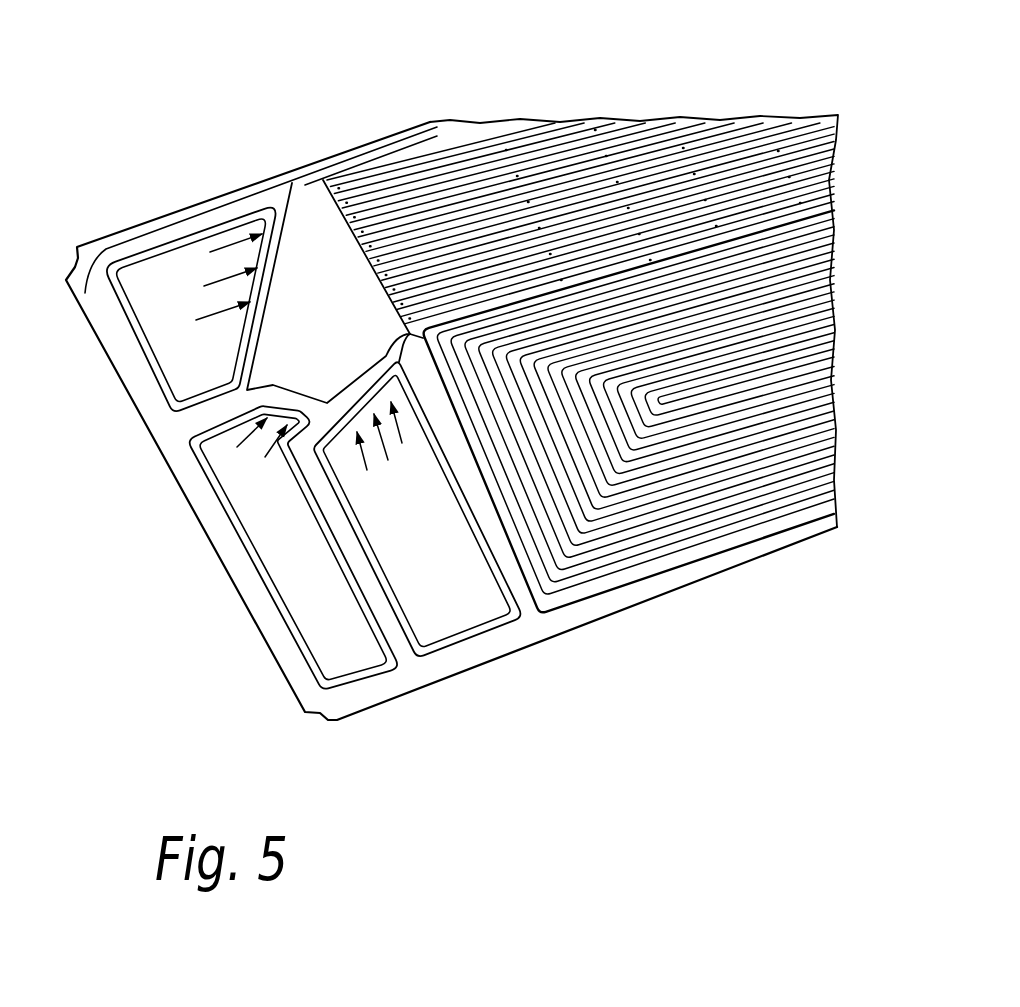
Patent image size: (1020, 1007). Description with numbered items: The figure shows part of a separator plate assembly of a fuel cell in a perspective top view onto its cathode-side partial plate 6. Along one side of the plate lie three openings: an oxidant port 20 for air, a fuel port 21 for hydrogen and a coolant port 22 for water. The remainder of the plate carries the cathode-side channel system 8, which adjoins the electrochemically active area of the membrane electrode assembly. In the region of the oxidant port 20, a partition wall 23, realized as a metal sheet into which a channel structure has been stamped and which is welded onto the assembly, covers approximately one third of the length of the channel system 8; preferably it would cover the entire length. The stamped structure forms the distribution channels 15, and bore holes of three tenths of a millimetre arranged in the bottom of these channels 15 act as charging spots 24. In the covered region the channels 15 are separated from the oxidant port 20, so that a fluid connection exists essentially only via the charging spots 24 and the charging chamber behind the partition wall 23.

The cathode-side partial plate 6 is at (192, 200).
The cathode-side channel system 8 is at (710, 478).
The distribution channels 15 is at (700, 115).
The oxidant port 20 is at (160, 341).
The fuel port 21 is at (307, 597).
The coolant port 22 is at (465, 613).
The partition wall 23 is at (388, 178).
The charging spots 24 is at (590, 123).